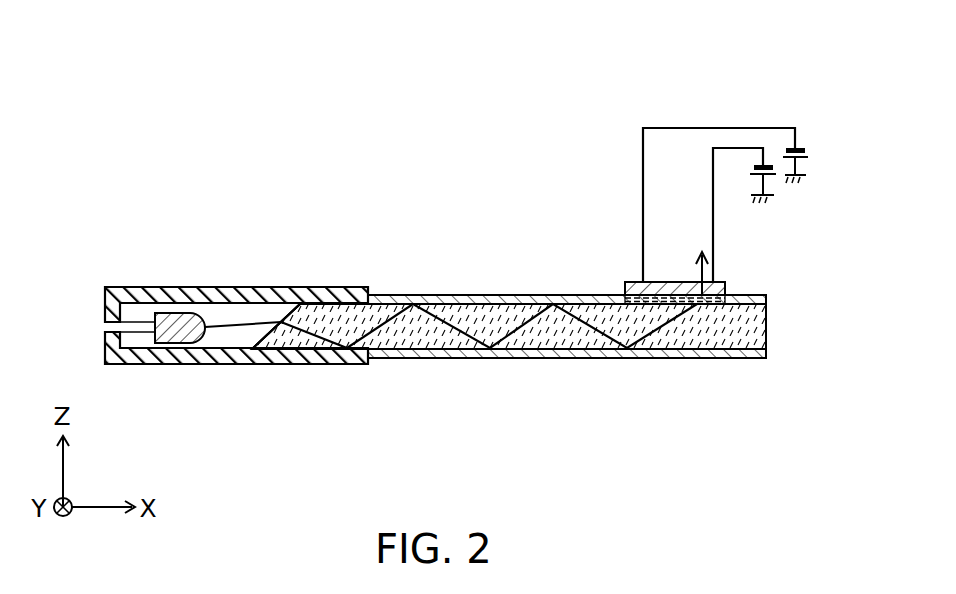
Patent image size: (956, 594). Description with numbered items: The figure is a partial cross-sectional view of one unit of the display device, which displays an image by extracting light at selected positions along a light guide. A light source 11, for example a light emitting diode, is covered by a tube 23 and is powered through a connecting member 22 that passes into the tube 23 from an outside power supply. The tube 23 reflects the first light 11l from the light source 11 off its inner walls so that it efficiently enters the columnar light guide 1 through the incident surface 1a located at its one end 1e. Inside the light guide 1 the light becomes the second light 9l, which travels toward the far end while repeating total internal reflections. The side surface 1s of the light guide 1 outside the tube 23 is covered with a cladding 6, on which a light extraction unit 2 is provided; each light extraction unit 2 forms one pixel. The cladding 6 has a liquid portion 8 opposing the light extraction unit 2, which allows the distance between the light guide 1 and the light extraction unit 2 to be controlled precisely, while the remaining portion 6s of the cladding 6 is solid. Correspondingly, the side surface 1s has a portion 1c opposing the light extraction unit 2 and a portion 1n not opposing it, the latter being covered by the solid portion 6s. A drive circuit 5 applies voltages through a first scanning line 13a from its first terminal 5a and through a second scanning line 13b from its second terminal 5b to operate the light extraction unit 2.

The light guide 1 is at (541, 312).
The incident surface 1a is at (283, 304).
The portion opposing the light extraction unit 1c is at (670, 308).
The one end 1e is at (276, 334).
The portion not opposing the light extraction unit 1n is at (768, 321).
The side surface 1s is at (586, 296).
The light extraction unit 2 is at (630, 283).
The drive circuit 5 is at (795, 105).
The first terminal 5a is at (797, 146).
The second terminal 5b is at (763, 164).
The cladding 6 is at (440, 297).
The portion of the cladding not opposing the light extraction unit 6s is at (762, 300).
The liquid portion 8 is at (723, 300).
The second light 9l is at (426, 330).
The light source 11 is at (180, 325).
The first light 11l is at (233, 322).
The first scanning line 13a is at (676, 128).
The second scanning line 13b is at (713, 221).
The connecting member 22 is at (128, 327).
The tube 23 is at (346, 295).